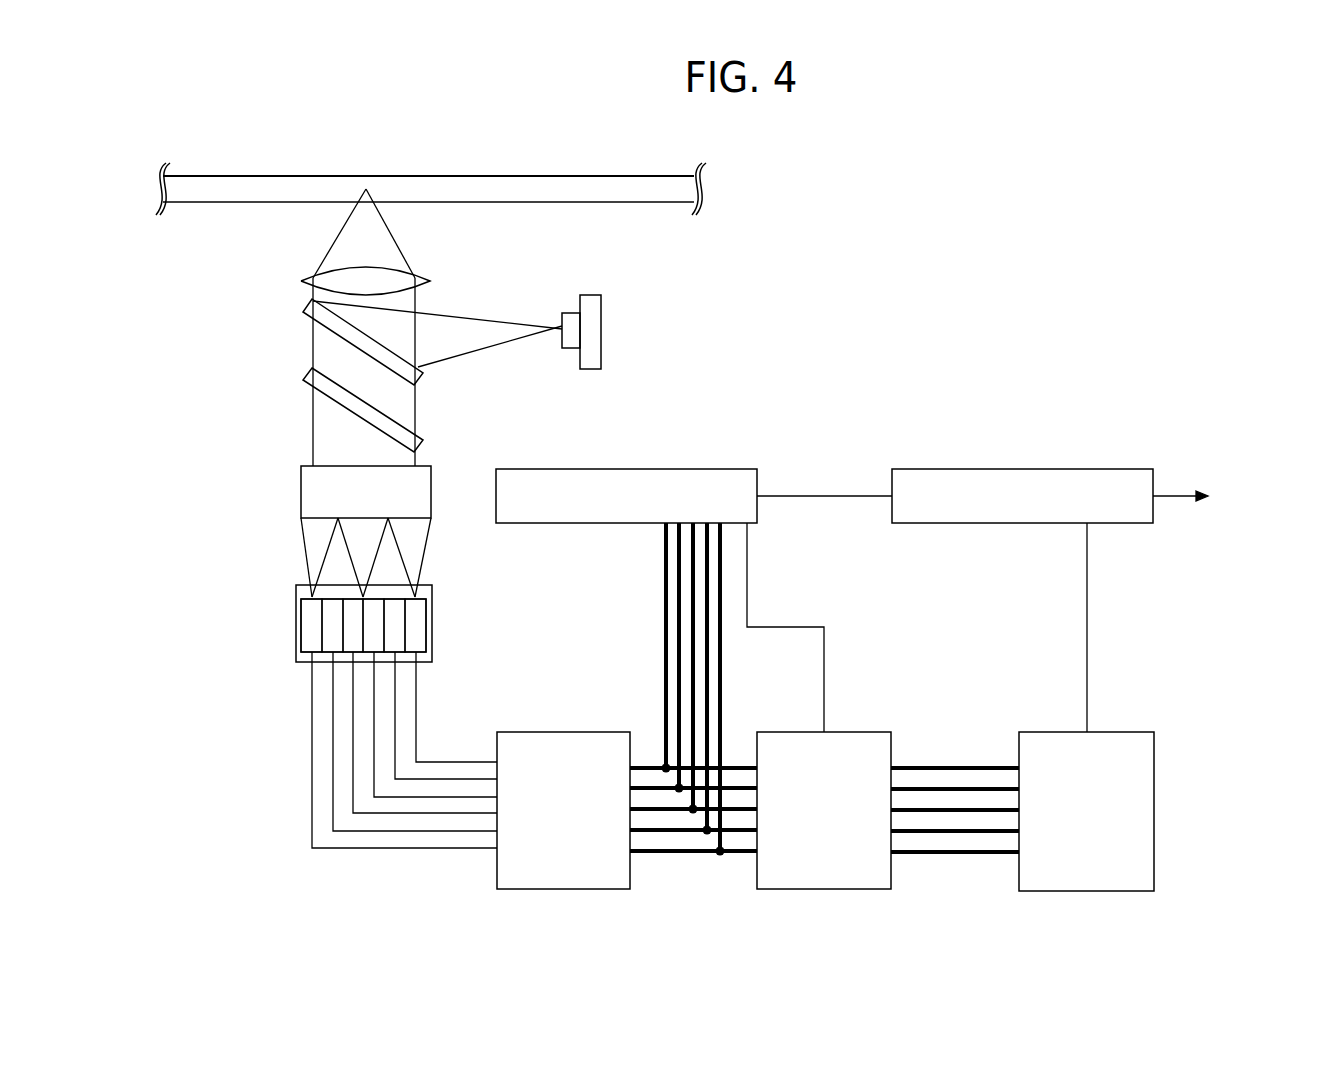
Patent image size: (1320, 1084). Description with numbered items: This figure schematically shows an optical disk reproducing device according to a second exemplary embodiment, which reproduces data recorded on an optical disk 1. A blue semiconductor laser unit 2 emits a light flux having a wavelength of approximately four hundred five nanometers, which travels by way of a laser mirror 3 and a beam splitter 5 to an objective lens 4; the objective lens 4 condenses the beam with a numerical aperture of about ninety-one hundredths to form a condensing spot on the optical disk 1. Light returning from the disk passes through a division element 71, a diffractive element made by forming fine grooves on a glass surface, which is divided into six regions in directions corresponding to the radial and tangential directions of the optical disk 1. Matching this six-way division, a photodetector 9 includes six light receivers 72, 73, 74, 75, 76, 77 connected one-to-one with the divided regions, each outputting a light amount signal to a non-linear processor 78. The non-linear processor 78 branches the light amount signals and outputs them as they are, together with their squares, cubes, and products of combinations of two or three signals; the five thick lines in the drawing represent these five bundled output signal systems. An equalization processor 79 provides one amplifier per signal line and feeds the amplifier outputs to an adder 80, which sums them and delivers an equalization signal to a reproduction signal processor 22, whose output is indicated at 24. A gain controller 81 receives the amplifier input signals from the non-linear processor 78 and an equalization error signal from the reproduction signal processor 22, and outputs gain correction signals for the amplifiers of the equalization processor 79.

The optical disk 1 is at (228, 185).
The blue semiconductor laser unit 2 is at (588, 312).
The laser mirror 3 is at (328, 322).
The objective lens 4 is at (338, 283).
The beam splitter 5 is at (328, 388).
The photodetector 9 is at (362, 629).
The division element 71 is at (320, 478).
The light receiver 72 is at (312, 617).
The light receiver 73 is at (333, 623).
The light receiver 74 is at (355, 643).
The light receiver 75 is at (372, 612).
The light receiver 76 is at (393, 628).
The light receiver 77 is at (417, 642).
The non-linear processor 78 is at (557, 873).
The equalization processor 79 is at (818, 865).
The adder 80 is at (1075, 864).
The gain controller 81 is at (710, 476).
The reproduction signal processor 22 is at (1042, 476).
The output 24 is at (1208, 488).